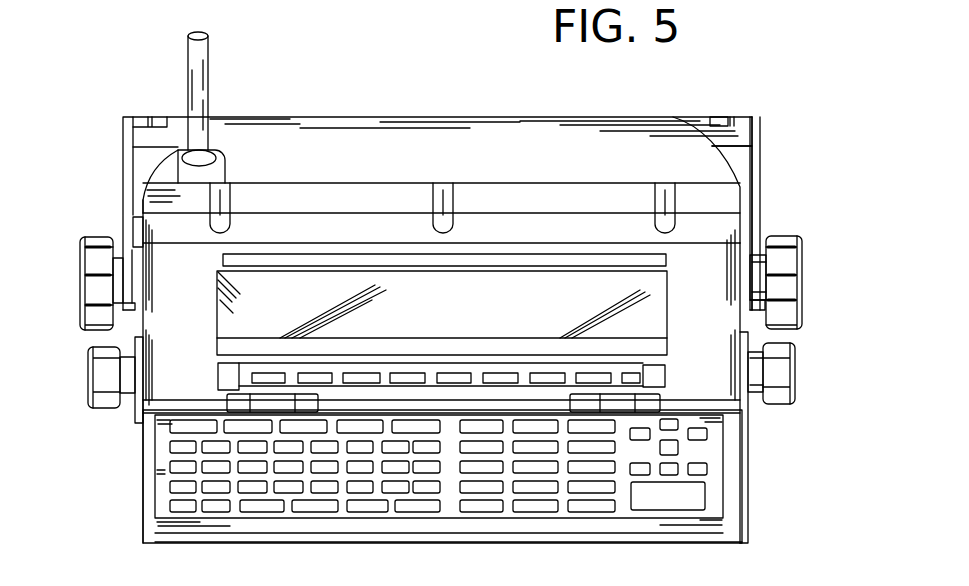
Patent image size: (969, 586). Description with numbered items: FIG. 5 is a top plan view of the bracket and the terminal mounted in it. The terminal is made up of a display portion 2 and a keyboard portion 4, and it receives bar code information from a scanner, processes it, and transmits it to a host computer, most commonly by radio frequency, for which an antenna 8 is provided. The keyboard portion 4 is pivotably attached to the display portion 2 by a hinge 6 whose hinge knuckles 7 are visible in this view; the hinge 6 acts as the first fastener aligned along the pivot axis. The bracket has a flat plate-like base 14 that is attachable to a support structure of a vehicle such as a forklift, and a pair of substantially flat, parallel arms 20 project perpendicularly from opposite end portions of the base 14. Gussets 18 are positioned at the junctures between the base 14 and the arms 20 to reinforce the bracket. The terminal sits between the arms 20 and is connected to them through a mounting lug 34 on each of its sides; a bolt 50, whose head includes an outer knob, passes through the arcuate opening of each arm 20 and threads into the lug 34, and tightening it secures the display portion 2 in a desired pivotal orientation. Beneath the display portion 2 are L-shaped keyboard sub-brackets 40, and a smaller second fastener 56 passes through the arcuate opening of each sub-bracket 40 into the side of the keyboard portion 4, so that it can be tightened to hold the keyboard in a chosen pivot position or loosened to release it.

The display portion 2 is at (715, 257).
The keyboard portion 4 is at (720, 480).
The hinge 6 is at (667, 400).
The hinge knuckles 7 is at (302, 394).
The antenna 8 is at (207, 72).
The base 14 is at (742, 136).
The gussets 18 is at (722, 117).
The arms 20 is at (123, 160).
The mounting lug 34 is at (142, 310).
The keyboard sub-brackets 40 is at (752, 370).
The bolt 50 is at (802, 262).
The keyboard second fastener 56 is at (797, 395).